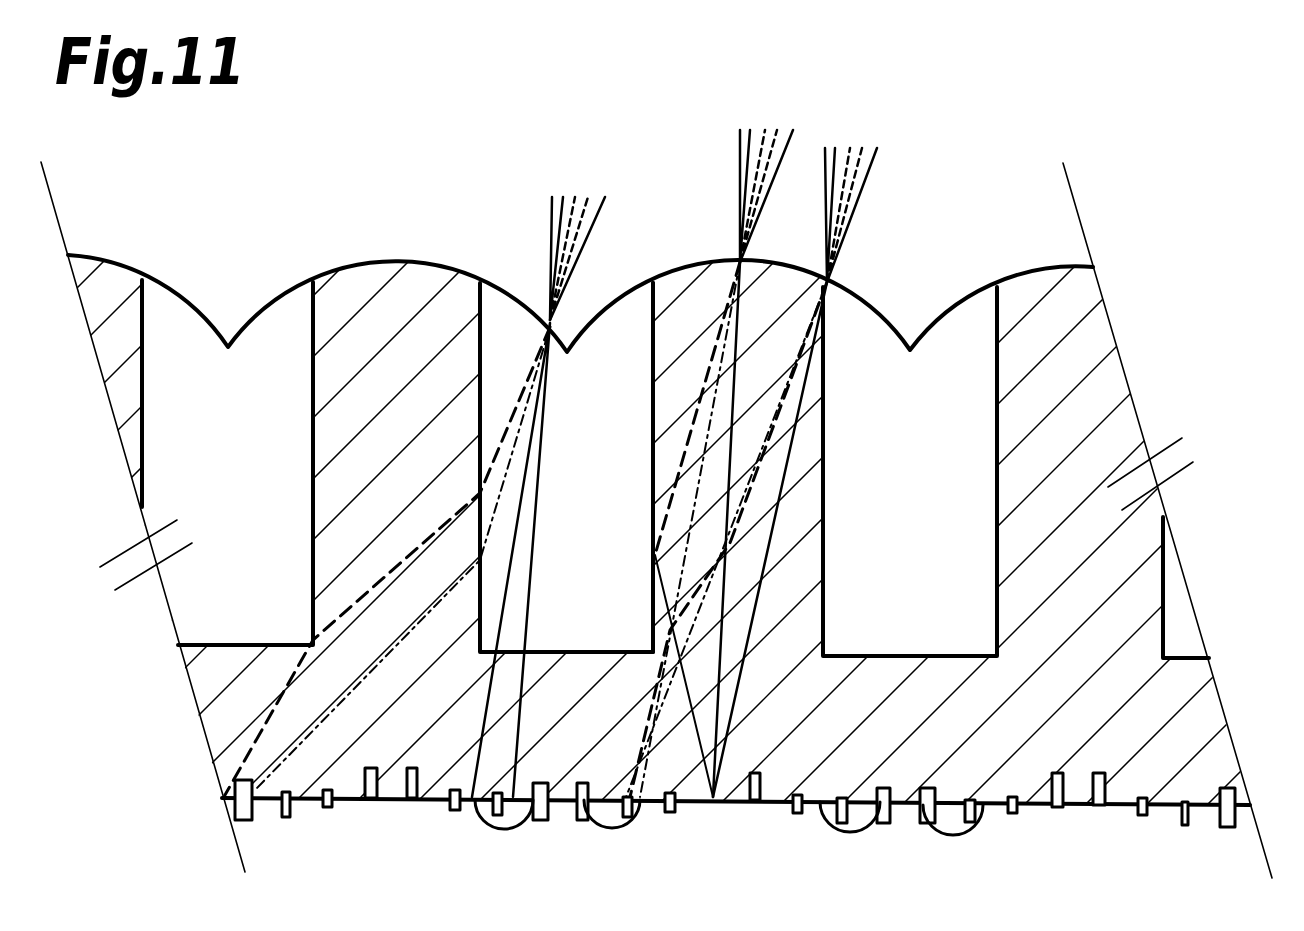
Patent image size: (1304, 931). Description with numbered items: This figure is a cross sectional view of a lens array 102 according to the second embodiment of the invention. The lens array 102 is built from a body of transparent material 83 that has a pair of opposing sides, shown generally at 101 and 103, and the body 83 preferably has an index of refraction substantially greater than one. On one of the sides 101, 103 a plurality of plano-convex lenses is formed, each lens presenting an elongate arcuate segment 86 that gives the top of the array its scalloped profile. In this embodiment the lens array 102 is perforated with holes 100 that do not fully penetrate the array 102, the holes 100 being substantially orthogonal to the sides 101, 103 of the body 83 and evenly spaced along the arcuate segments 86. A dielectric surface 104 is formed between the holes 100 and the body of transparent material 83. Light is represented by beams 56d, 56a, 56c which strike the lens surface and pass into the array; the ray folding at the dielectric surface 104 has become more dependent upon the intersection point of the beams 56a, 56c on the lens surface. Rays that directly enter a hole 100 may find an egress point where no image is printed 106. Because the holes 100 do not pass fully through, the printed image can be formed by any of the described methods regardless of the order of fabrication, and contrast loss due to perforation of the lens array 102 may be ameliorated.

The side of the body of transparent material 101 is at (177, 221).
The hole 100 is at (185, 398).
The elongate arcuate segment 86 is at (290, 285).
The beam 56d is at (550, 323).
The beam 56a is at (740, 260).
The beam 56c is at (827, 280).
The lens array 102 is at (1065, 435).
The dielectric surface 104 is at (652, 567).
The side of the body of transparent material 103 is at (382, 834).
The egress point where no image is printed 106 is at (550, 802).
The body of transparent material 83 is at (1077, 733).